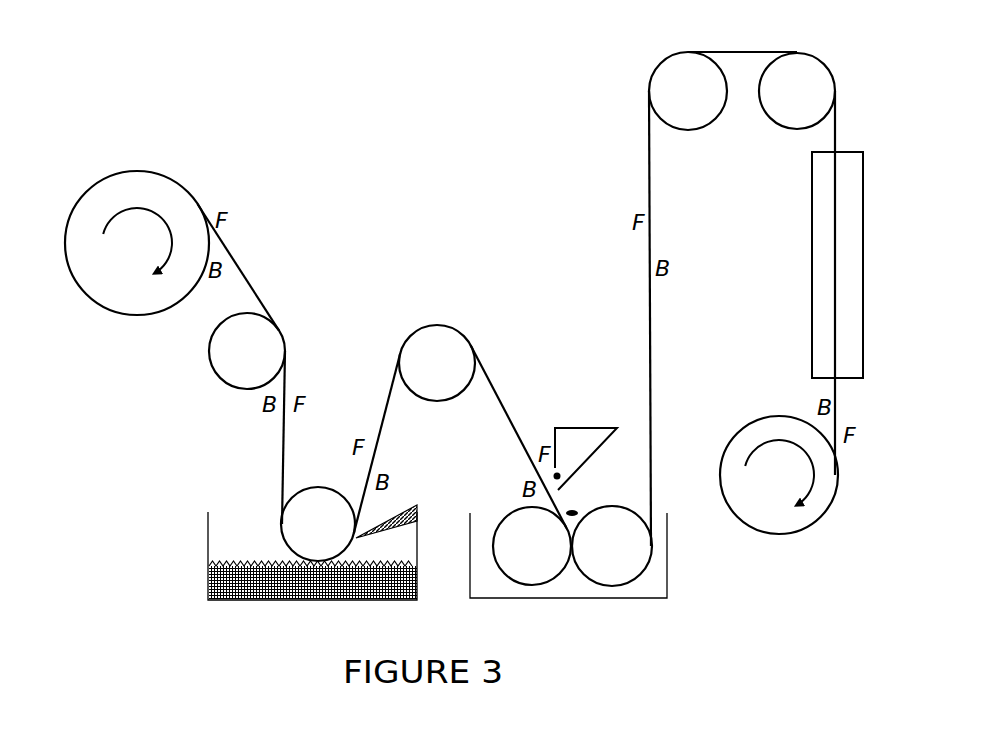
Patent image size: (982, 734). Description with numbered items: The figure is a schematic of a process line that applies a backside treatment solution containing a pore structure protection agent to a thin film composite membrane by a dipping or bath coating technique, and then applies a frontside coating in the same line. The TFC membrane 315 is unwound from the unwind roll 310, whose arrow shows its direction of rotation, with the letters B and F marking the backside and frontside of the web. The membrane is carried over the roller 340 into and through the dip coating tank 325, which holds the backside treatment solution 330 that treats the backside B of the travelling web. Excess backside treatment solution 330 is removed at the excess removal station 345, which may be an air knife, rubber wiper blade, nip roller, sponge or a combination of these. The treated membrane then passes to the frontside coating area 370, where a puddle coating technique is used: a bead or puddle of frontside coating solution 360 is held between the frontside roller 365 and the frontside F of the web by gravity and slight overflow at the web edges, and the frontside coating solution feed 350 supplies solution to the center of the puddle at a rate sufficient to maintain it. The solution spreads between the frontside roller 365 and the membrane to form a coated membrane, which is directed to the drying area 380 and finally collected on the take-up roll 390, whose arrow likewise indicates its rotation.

The unwind roll 310 is at (107, 295).
The TFC membrane 315 is at (240, 280).
The dip coating tank 325 is at (208, 540).
The backside treatment solution 330 is at (210, 578).
The roller 340 is at (296, 540).
The excess removal station 345 is at (404, 512).
The frontside coating solution feed 350 is at (575, 440).
The frontside coating solution 360 is at (575, 515).
The frontside roller 365 is at (633, 560).
The frontside coating area 370 is at (668, 575).
The drying area 380 is at (808, 280).
The take-up roll 390 is at (770, 513).